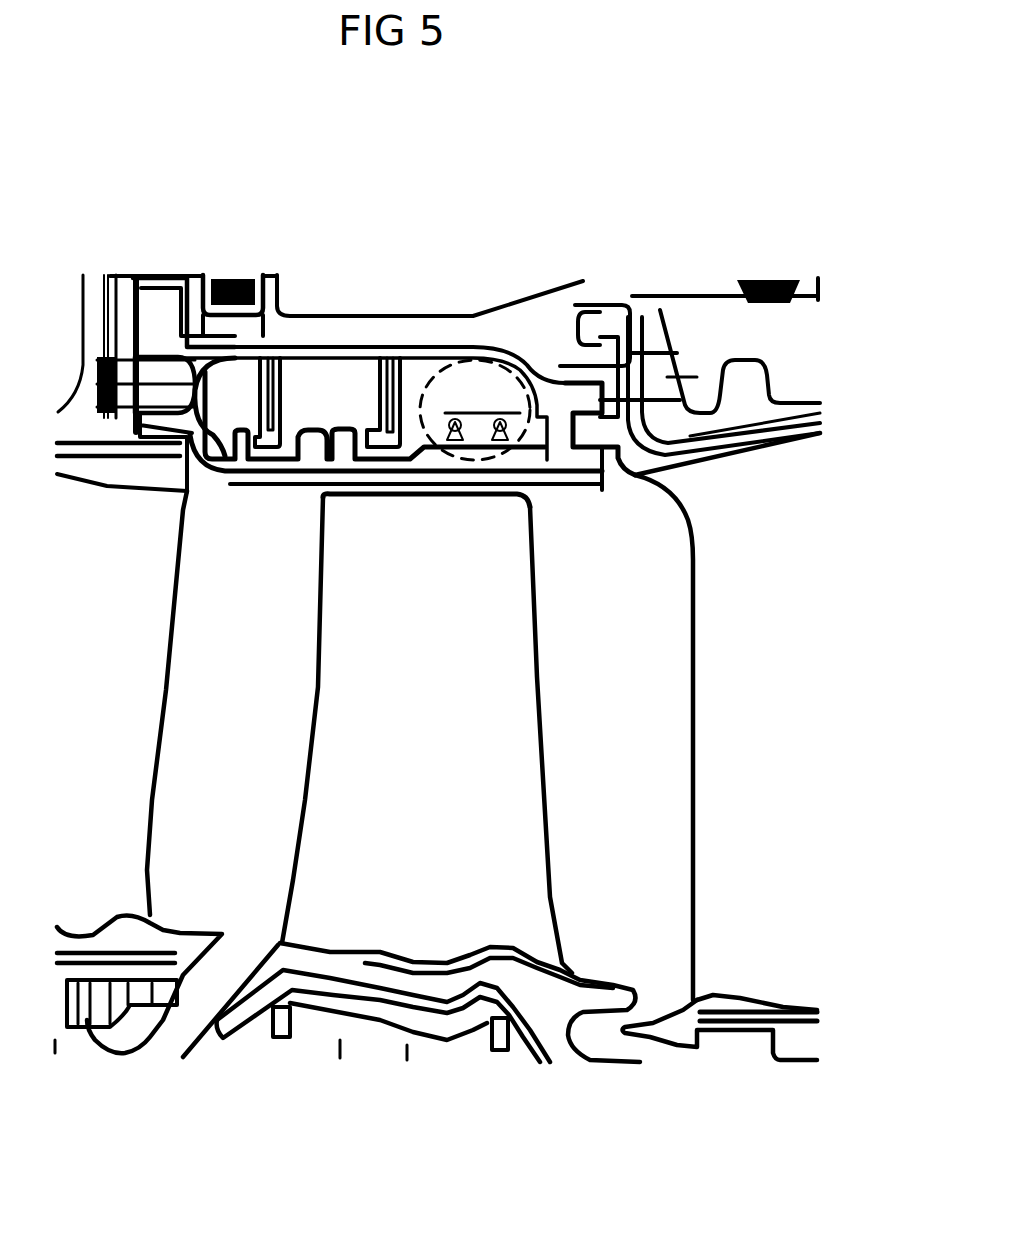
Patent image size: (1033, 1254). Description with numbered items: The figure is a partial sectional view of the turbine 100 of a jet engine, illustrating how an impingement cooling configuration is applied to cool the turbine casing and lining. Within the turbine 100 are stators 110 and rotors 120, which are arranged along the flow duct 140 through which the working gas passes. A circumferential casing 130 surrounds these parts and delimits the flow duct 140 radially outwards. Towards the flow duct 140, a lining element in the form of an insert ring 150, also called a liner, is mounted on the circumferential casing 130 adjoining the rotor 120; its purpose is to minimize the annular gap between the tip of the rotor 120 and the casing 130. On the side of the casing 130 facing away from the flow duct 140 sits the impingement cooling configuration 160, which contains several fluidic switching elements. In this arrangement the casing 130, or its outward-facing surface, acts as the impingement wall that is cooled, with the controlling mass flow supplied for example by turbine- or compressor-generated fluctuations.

The turbine 100 is at (720, 198).
The stator 110 is at (140, 776).
The rotor 120 is at (525, 835).
The circumferential casing 130 is at (418, 460).
The flow duct 140 is at (262, 672).
The insert ring 150 is at (583, 488).
The impingement cooling configuration 160 is at (478, 400).